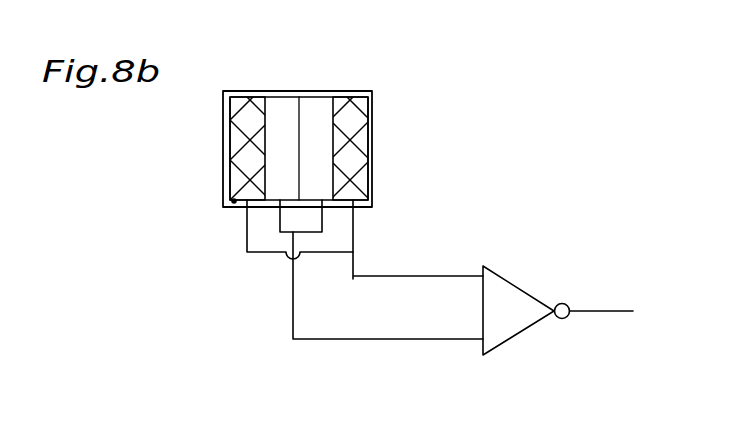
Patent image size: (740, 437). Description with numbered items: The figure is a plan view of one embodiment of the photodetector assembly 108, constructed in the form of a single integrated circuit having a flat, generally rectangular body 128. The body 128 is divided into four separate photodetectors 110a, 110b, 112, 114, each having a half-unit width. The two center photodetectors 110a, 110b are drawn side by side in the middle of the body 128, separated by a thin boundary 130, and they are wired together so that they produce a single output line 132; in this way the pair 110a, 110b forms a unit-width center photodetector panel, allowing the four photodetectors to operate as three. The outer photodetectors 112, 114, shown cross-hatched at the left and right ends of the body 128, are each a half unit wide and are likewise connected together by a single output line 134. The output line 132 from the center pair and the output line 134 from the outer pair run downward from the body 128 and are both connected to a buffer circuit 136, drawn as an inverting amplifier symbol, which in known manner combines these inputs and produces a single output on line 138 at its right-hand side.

The transducer assembly 108 is at (300, 170).
The center photodetector 110a is at (318, 112).
The center photodetector 110b is at (280, 117).
The photodetector 112 is at (243, 148).
The photodetector 114 is at (360, 148).
The body 128 is at (267, 57).
The electrode layer 130 is at (326, 87).
The output line 132 is at (292, 275).
The output line 134 is at (355, 270).
The buffer circuit 136 is at (503, 290).
The output line 138 is at (608, 310).